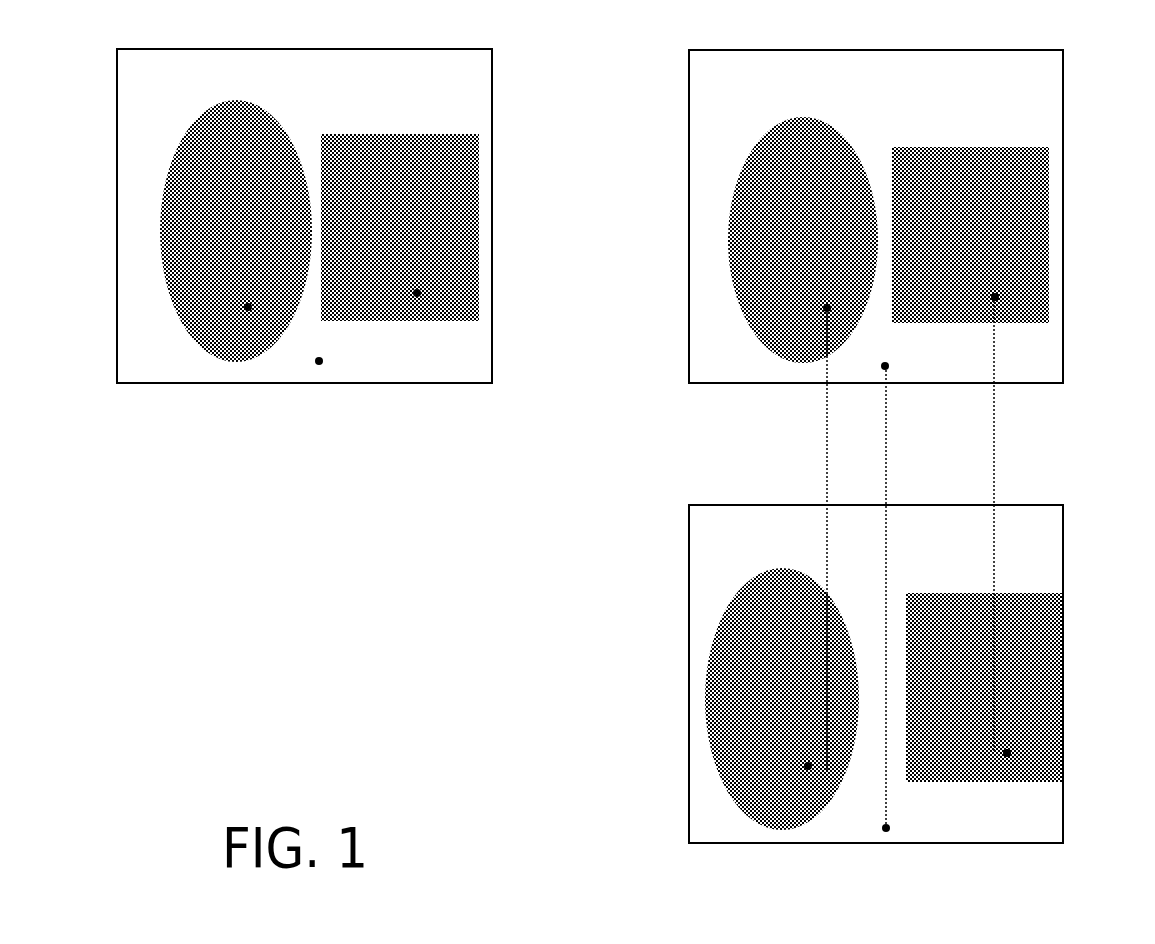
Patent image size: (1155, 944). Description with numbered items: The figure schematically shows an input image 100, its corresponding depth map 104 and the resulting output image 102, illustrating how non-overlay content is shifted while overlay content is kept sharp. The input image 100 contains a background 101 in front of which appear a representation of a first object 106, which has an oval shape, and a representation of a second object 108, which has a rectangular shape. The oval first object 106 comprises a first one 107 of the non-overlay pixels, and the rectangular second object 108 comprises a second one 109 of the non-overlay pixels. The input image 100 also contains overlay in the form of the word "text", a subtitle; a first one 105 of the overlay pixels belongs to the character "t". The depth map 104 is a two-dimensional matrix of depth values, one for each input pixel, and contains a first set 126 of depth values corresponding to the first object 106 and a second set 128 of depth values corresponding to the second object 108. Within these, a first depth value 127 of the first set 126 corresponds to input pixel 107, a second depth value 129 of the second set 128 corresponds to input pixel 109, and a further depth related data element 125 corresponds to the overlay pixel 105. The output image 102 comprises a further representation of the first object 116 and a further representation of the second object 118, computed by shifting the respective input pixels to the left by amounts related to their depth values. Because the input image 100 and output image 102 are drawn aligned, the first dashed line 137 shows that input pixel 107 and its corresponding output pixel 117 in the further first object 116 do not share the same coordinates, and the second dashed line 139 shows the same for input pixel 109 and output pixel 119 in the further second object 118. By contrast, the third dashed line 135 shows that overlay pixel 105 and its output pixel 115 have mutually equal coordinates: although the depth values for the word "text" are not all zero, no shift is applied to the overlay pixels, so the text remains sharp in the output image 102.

The input image 100 is at (1063, 97).
The background 101 is at (726, 97).
The output image 102 is at (1063, 537).
The depth map 104 is at (117, 89).
The first one of the first group of pixels 105 is at (887, 368).
The representation of the first object 106 is at (764, 232).
The first one of the second group of pixels 107 is at (825, 308).
The representation of the second object 108 is at (1020, 226).
The second one of the second group of pixels 109 is at (995, 297).
The output pixel 115 is at (886, 830).
The further representation of the first object 116 is at (768, 690).
The first one of pixels of the further representation of the first object 117 is at (804, 767).
The further representation of the second object 118 is at (1023, 684).
The first one of pixels of the further representation of the second object 119 is at (1007, 753).
The depth related data element 125 is at (320, 365).
The first set of depth values 126 is at (186, 233).
The first one of the depth values of the first set 127 is at (244, 307).
The second set of depth values 128 is at (440, 233).
The second one of the depth values of the second set 129 is at (418, 293).
The third dashed line 135 is at (889, 480).
The first dashed line 137 is at (826, 478).
The second dashed line 139 is at (994, 470).